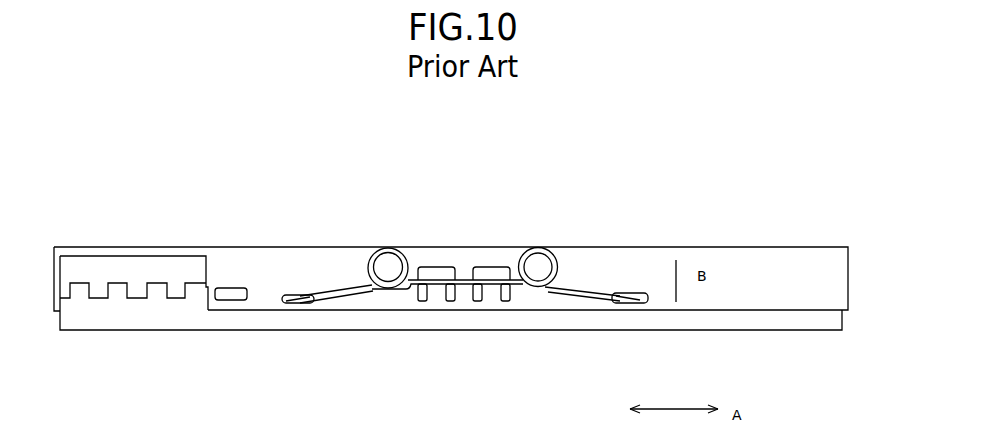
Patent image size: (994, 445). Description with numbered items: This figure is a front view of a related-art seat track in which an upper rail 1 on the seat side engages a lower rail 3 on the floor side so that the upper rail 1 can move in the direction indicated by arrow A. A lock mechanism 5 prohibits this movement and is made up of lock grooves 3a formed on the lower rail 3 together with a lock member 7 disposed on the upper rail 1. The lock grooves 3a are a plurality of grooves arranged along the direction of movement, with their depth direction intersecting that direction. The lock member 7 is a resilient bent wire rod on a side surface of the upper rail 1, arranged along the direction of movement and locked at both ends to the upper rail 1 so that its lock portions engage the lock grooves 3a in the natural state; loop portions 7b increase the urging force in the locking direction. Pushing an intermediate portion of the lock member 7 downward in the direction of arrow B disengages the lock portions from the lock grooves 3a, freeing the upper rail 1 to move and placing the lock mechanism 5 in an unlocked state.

The upper rail 1 is at (752, 258).
The lower rail 3 is at (451, 294).
The lock grooves 3a is at (88, 282).
The lock mechanism 5 is at (465, 227).
The lock member 7 is at (410, 281).
The loop portions 7b is at (367, 250).